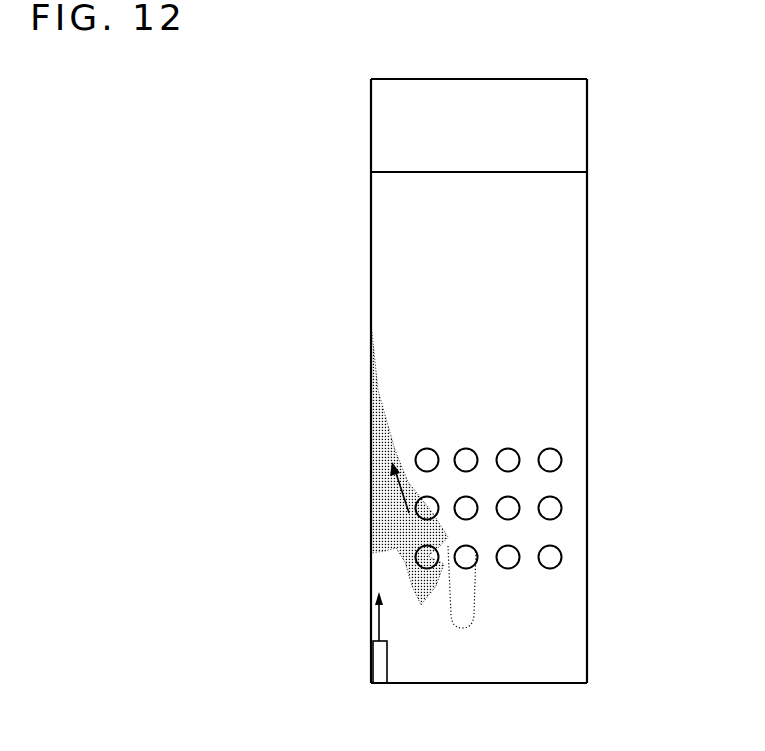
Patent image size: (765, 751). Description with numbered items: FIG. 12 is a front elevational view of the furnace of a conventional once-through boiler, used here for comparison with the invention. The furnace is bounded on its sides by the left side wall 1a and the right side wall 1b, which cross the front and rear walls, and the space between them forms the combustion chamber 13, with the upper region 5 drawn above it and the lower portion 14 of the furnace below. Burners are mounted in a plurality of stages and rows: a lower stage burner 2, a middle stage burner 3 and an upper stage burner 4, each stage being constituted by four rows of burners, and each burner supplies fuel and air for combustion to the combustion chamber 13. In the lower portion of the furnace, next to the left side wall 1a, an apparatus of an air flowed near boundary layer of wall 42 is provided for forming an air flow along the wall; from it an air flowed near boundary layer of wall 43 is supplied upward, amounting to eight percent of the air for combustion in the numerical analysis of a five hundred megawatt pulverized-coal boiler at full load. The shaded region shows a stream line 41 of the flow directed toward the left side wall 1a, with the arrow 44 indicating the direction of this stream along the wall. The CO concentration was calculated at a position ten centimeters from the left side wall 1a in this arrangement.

The left side wall 1a is at (388, 273).
The right side wall 1b is at (587, 275).
The lower stage burner 2 is at (562, 557).
The middle stage burner 3 is at (549, 496).
The upper stage burner 4 is at (549, 447).
The upper chamber / gas outlet 5 is at (573, 133).
The combustion chamber 13 is at (413, 210).
The lower chamber 14 is at (562, 609).
The stream line 41 is at (392, 531).
The apparatus of an air flowed near boundary layer of wall 42 is at (373, 657).
The air flowed near boundary layer of wall 43 is at (378, 625).
The gas flow direction 44 is at (395, 488).